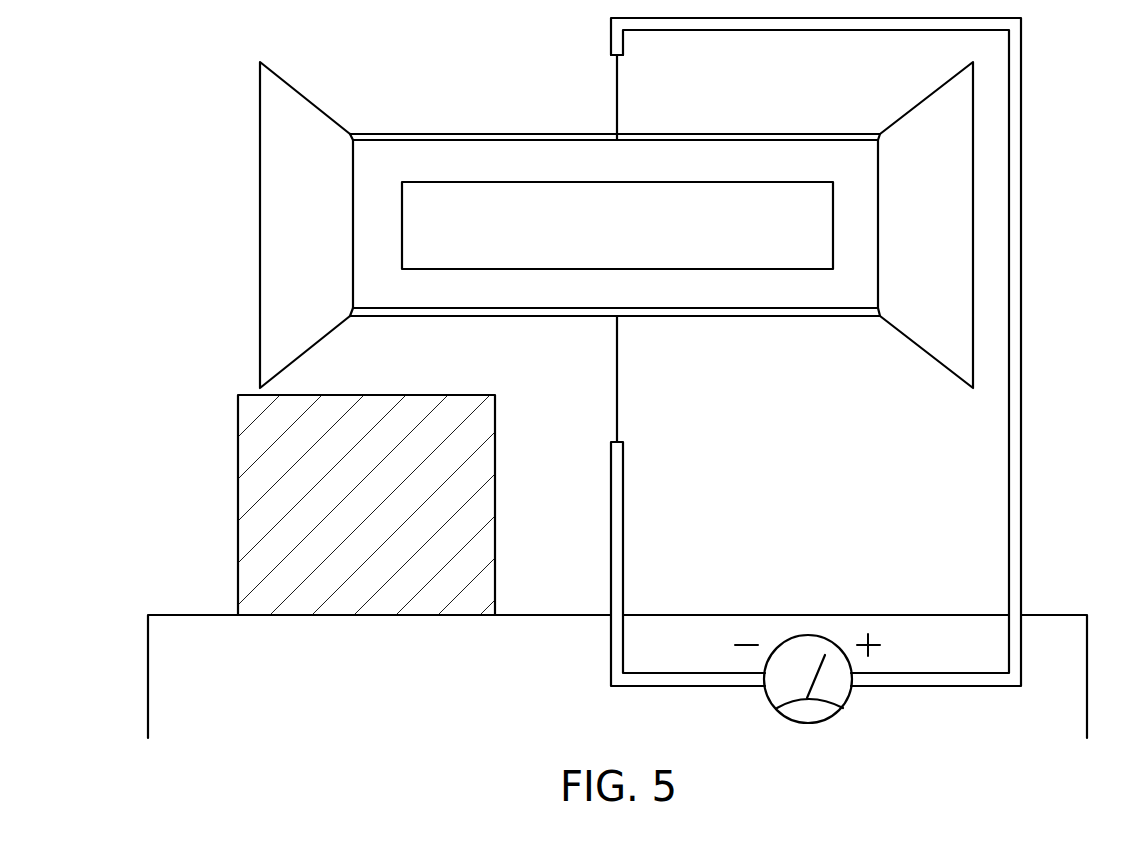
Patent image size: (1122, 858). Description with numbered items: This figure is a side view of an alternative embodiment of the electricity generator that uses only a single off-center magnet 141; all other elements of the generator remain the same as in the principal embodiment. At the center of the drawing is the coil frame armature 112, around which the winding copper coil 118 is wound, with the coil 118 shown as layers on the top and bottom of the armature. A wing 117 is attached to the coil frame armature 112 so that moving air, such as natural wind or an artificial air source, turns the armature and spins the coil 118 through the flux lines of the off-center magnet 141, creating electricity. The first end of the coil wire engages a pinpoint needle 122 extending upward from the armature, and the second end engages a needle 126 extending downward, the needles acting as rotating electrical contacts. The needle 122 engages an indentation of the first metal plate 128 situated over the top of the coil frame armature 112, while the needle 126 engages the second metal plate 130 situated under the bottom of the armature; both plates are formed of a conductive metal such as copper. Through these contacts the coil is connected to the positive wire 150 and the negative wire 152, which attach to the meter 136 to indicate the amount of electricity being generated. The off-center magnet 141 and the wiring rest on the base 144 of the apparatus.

The coil frame armature 112 is at (775, 298).
The wing 117 is at (272, 230).
The coil 118 is at (830, 132).
The needle 122 is at (617, 80).
The needle 126 is at (617, 375).
The first metal plate 128 is at (617, 136).
The second metal plate 130 is at (617, 314).
The meter 136 is at (808, 723).
The off-center magnet 141 is at (247, 490).
The base 144 is at (159, 677).
The positive wire 150 is at (1021, 513).
The negative wire 152 is at (623, 513).